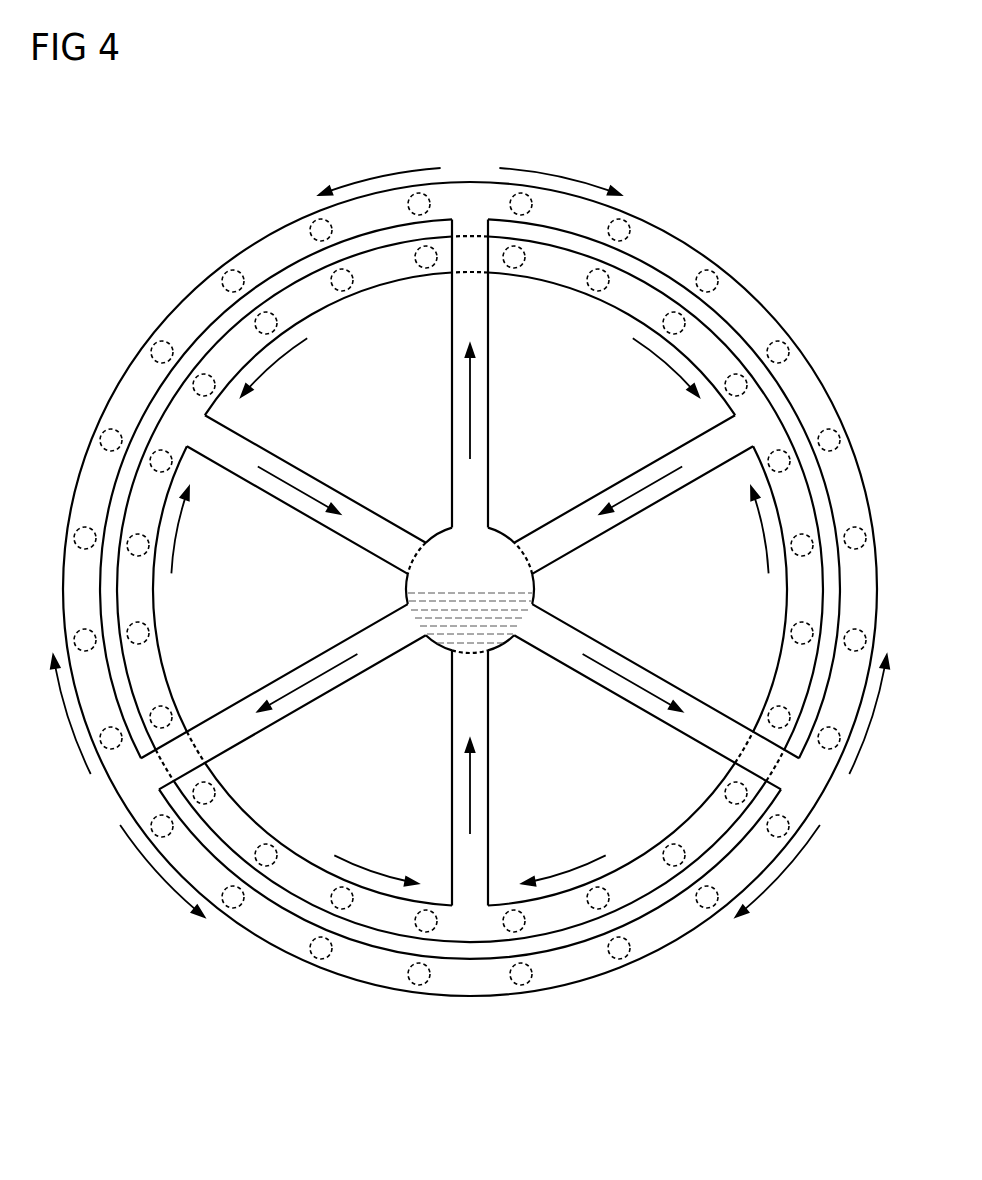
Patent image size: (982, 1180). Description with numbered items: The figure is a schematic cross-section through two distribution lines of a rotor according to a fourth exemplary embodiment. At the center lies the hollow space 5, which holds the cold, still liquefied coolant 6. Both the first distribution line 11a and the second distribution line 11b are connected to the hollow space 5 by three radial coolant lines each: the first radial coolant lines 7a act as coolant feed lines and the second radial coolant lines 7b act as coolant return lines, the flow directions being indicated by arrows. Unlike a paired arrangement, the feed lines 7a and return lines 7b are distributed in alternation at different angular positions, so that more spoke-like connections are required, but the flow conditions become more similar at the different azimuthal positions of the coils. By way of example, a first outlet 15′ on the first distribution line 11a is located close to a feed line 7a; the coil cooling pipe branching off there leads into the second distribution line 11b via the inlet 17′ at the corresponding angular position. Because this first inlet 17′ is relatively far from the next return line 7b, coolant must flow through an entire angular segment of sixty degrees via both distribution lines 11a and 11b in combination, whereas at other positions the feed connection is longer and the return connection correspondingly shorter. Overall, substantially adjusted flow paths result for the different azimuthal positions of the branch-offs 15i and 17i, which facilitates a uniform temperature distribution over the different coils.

The hollow space 5 is at (480, 580).
The coolant 6 is at (445, 636).
The first radial coolant line 7a is at (490, 397).
The second radial coolant line 7b is at (363, 517).
The first distribution line 11a is at (196, 303).
The second distribution line 11b is at (241, 350).
The first outlet 15′ is at (526, 200).
The branch-off 15i is at (621, 222).
The first inlet 17′ is at (510, 265).
The branch-off 17i is at (598, 292).